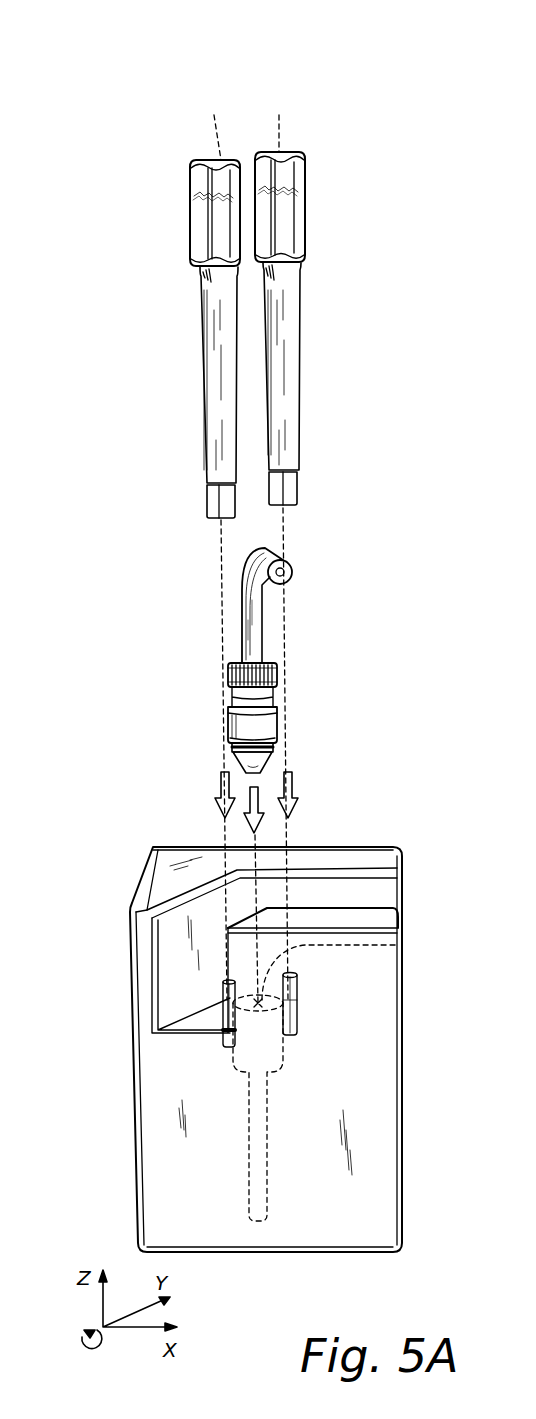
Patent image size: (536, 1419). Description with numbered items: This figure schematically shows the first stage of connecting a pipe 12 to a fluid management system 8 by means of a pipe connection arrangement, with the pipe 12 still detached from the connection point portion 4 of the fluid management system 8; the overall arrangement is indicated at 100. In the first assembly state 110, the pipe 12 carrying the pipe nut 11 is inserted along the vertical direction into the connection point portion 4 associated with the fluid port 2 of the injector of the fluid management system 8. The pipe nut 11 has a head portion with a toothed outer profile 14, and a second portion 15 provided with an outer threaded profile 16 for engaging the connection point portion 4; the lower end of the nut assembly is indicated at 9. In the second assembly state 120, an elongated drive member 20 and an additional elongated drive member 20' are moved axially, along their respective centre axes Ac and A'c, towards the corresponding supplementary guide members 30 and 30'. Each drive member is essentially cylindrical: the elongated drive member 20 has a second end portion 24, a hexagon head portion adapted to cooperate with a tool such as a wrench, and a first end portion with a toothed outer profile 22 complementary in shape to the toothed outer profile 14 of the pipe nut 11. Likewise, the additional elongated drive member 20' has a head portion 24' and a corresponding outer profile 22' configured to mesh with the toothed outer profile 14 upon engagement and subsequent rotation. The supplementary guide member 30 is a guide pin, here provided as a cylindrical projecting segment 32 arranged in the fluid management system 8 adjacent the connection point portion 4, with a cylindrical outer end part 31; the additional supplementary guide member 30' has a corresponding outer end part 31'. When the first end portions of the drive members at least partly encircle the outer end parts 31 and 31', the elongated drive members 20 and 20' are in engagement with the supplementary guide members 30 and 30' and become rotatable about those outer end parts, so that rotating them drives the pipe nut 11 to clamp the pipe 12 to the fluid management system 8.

The system 100 is at (132, 88).
The second assembly state 120 is at (338, 300).
The centre axis Ac is at (213, 142).
The tool axis A'c is at (317, 125).
The second end portion 24 is at (179, 213).
The handle 24' is at (312, 207).
The elongated drive member 20 is at (189, 375).
The additional elongated drive member 20' is at (315, 366).
The toothed outer profile 22 is at (187, 730).
The corresponding outer profile 22' is at (318, 724).
The first assembly state 110 is at (295, 717).
The pipe 12 is at (262, 552).
The pipe nut 11 is at (232, 728).
The toothed outer profile 14 is at (232, 678).
The second portion 15 is at (235, 748).
The outer threaded profile 16 is at (252, 747).
The nozzle tip 9 is at (268, 765).
The fluid management system 8 is at (160, 878).
The fluid port 2 is at (268, 945).
The connection point portion 4 is at (315, 1028).
The supplementary guide member 30 is at (149, 956).
The outer end part 31 is at (149, 956).
The cylindrical projecting segment 32 is at (229, 1013).
The additional supplementary guide member 30' is at (387, 993).
The corresponding outer end part 31' is at (387, 964).